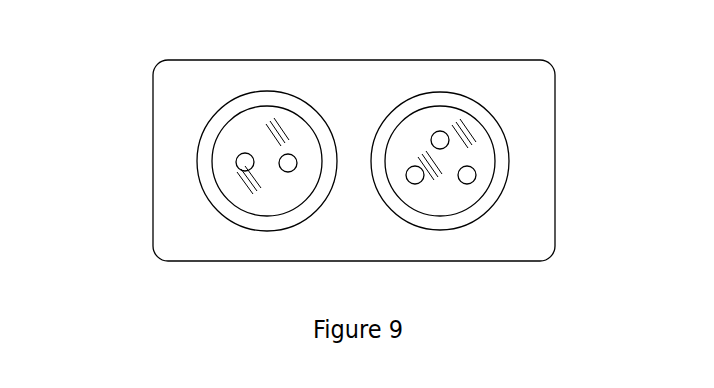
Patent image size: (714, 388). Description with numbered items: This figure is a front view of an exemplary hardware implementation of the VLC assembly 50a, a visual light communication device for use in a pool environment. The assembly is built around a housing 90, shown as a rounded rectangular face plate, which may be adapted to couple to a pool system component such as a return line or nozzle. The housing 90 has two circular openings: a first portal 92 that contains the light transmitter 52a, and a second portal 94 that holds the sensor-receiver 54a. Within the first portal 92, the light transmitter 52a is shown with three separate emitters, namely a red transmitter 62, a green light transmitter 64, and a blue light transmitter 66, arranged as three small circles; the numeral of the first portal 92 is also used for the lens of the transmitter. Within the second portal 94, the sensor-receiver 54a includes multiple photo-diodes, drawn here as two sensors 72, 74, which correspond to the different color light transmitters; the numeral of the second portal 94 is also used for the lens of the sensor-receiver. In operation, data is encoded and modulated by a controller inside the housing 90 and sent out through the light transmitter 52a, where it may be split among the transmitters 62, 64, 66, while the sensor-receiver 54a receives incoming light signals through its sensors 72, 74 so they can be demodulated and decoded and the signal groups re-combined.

The VLC assembly 50a is at (315, 169).
The housing 90 is at (163, 162).
The sensor-receiver 54a is at (256, 203).
The light transmitter 52a is at (465, 182).
The sensor 72 is at (241, 154).
The sensor 74 is at (292, 155).
The second portal 94 is at (241, 182).
The red transmitter 62 is at (409, 168).
The green light transmitter 64 is at (437, 132).
The blue light transmitter 66 is at (470, 168).
The first portal 92 is at (428, 193).